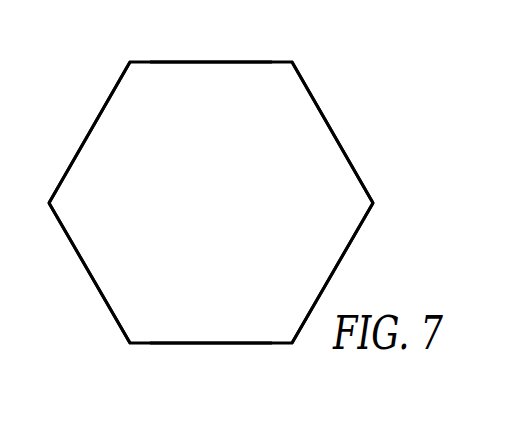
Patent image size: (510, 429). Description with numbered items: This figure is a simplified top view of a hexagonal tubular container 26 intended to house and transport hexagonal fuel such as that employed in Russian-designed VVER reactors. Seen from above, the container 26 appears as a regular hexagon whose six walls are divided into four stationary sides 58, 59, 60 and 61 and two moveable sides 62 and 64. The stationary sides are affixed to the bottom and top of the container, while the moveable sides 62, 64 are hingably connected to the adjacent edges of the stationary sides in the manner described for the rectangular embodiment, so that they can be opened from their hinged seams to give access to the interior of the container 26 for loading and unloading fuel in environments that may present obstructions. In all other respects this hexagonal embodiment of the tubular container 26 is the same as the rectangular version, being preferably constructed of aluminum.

The tubular container 26 is at (221, 214).
The stationary side 58 is at (320, 110).
The stationary side 59 is at (208, 61).
The stationary side 60 is at (102, 110).
The stationary side 61 is at (83, 265).
The moveable side 62 is at (218, 344).
The moveable side 64 is at (343, 257).